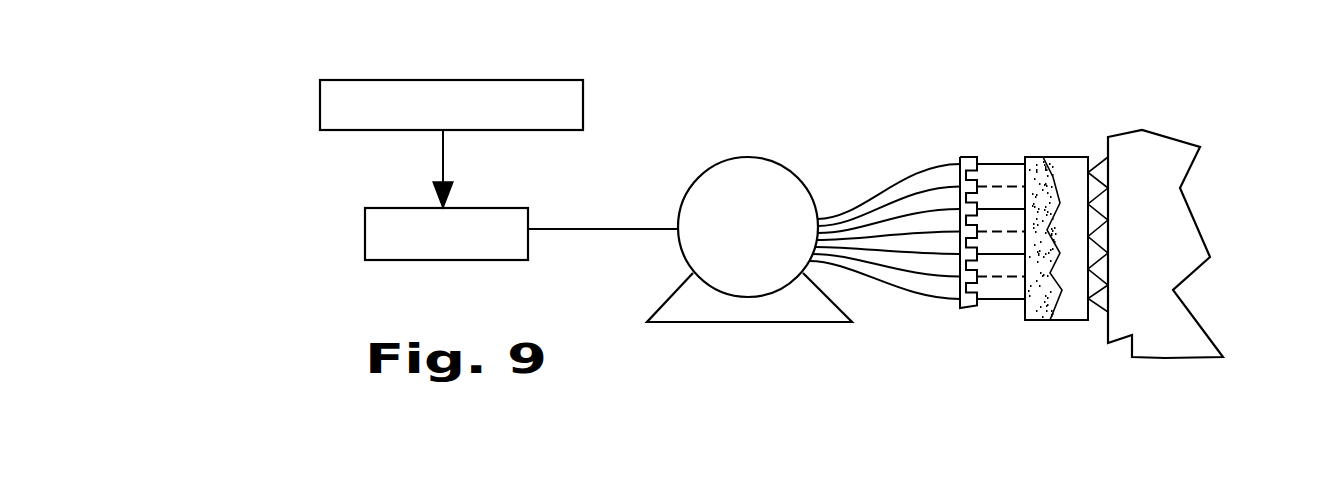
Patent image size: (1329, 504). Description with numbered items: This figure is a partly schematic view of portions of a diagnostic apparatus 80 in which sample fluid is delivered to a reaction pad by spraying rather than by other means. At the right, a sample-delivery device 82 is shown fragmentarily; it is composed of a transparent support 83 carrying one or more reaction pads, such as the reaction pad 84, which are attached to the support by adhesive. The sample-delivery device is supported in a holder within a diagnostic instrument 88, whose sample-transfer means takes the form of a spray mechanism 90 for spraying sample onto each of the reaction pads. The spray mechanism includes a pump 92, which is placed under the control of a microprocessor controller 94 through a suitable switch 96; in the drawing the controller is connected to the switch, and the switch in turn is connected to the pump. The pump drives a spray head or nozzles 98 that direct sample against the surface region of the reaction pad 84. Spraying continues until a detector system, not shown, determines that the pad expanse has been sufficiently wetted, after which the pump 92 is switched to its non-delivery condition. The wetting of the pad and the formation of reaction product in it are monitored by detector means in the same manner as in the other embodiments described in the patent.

The diagnostic apparatus 80 is at (717, 203).
The sample-delivery device 82 is at (1187, 237).
The transparent support 83 is at (1182, 153).
The reaction pad 84 is at (1070, 162).
The diagnostic instrument 88 is at (506, 78).
The spray mechanism 90 is at (662, 254).
The pump 92 is at (768, 185).
The microprocessor controller 94 is at (583, 103).
The switch 96 is at (363, 228).
The spray head or nozzles 98 is at (972, 183).